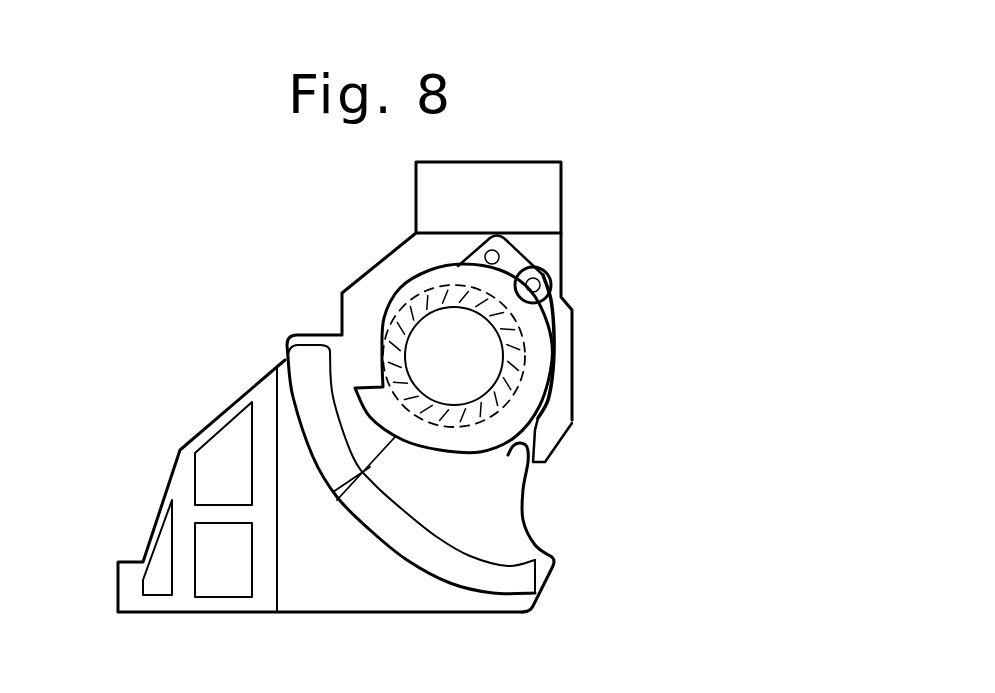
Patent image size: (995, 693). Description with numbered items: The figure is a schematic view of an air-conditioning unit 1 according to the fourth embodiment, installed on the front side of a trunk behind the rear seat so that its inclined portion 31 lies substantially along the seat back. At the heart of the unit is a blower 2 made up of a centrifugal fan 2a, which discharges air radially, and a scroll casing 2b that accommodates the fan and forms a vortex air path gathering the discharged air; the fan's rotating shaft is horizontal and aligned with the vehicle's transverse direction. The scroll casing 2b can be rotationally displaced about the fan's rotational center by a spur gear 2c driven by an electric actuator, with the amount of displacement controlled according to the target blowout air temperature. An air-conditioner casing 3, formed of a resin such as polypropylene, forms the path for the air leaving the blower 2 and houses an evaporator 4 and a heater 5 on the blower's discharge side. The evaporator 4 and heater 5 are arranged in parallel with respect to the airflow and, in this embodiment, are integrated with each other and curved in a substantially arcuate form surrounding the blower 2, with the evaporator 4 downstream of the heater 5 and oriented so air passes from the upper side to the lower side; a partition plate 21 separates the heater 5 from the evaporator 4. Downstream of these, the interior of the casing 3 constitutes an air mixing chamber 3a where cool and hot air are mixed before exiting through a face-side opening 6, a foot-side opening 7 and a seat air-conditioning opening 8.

The air-conditioning unit 1 is at (568, 181).
The blower 2 is at (571, 367).
The centrifugal fan 2a is at (545, 322).
The scroll casing 2b is at (540, 418).
The spur gear 2c is at (537, 254).
The air-conditioner casing 3 is at (531, 503).
The air mixing chamber 3a is at (183, 490).
The evaporator 4 is at (508, 567).
The heater 5 is at (310, 367).
The face-side opening 6 is at (222, 570).
The foot-side opening 7 is at (225, 463).
The seat air-conditioning opening 8 is at (153, 555).
The partition plate 21 is at (379, 461).
The inclined portion of the air-conditioning unit 31 is at (152, 535).